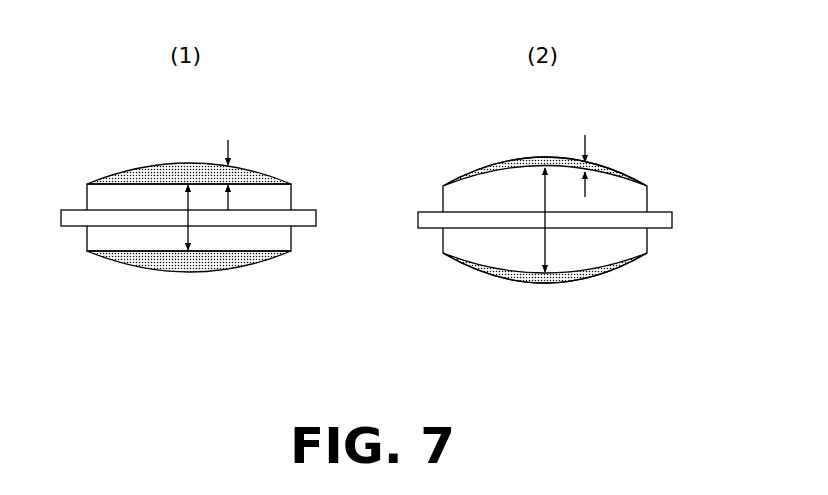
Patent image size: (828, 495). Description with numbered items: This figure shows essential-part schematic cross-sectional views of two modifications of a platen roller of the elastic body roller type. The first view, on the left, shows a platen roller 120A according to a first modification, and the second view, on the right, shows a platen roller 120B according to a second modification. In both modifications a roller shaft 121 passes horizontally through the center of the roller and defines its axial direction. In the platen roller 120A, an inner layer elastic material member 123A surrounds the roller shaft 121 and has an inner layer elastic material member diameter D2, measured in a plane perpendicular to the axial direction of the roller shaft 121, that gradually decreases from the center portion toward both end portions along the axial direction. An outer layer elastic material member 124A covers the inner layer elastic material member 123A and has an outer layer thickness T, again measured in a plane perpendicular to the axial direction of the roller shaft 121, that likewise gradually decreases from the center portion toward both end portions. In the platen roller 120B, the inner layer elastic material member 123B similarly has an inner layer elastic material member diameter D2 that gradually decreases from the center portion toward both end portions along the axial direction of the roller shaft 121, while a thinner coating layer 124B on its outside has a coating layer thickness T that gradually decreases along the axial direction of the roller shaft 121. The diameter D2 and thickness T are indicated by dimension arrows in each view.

The platen roller 120A is at (211, 214).
The platen roller 120B is at (565, 214).
The roller shaft 121 is at (64, 228).
The inner layer elastic material member 123A is at (140, 237).
The inner layer elastic material member 123B is at (498, 253).
The outer layer elastic material member 124A is at (210, 273).
The coating layer 124B is at (568, 283).
The inner layer elastic material member diameter D2 is at (187, 197).
The outer layer thickness T is at (237, 174).